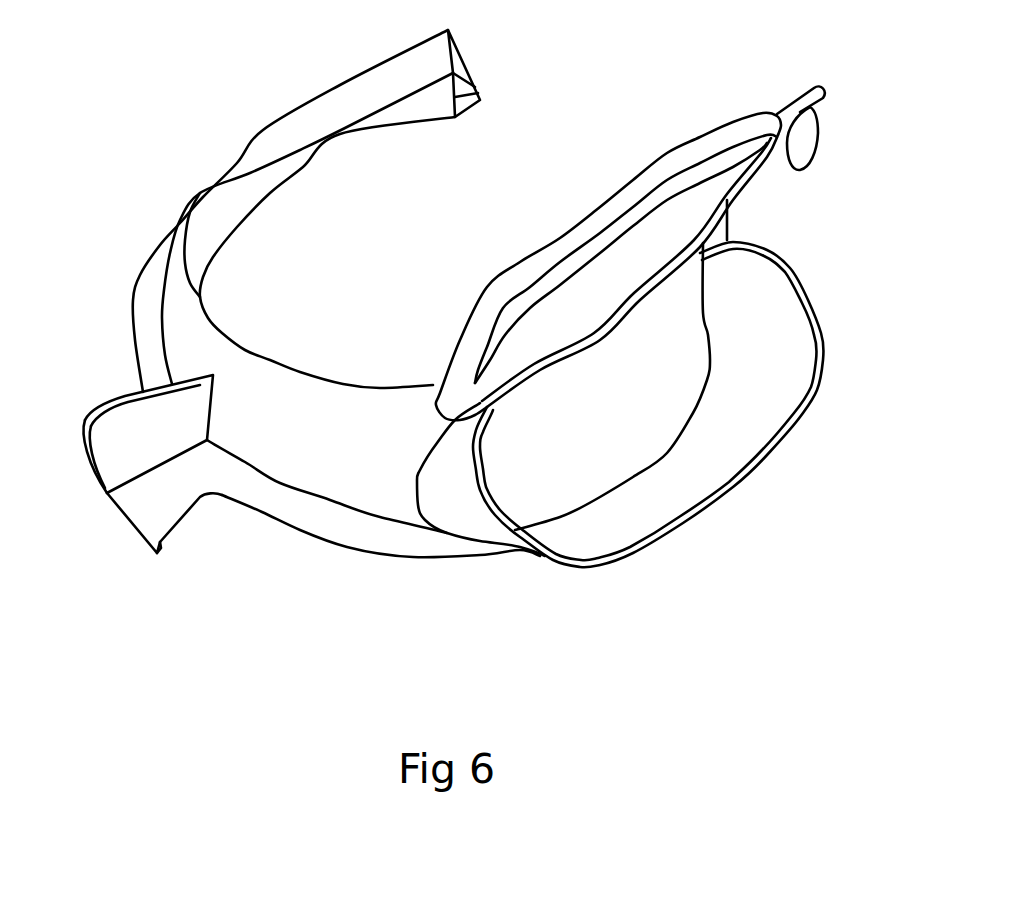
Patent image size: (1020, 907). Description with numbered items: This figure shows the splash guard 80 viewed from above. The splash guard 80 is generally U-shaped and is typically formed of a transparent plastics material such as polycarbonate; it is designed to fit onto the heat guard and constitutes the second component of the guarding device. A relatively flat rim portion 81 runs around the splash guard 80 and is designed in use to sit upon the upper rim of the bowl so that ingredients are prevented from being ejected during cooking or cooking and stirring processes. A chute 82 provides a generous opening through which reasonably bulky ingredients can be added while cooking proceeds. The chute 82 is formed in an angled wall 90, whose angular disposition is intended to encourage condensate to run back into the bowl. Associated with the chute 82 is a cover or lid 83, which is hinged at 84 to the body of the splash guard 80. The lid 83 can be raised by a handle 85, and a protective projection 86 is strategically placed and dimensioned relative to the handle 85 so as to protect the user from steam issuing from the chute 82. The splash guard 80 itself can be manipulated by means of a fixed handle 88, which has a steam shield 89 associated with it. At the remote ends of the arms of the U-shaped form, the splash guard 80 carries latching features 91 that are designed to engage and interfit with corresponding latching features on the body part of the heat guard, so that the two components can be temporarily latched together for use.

The splash guard 80 is at (385, 598).
The rim portion 81 is at (400, 537).
The chute 82 is at (642, 548).
The lid 83 is at (707, 203).
The hinge 84 is at (620, 330).
The handle 85 is at (823, 92).
The protective projection 86 is at (797, 152).
The fixed handle 88 is at (128, 440).
The steam shield 89 is at (160, 508).
The angled wall 90 is at (327, 443).
The latching features 91 is at (467, 75).